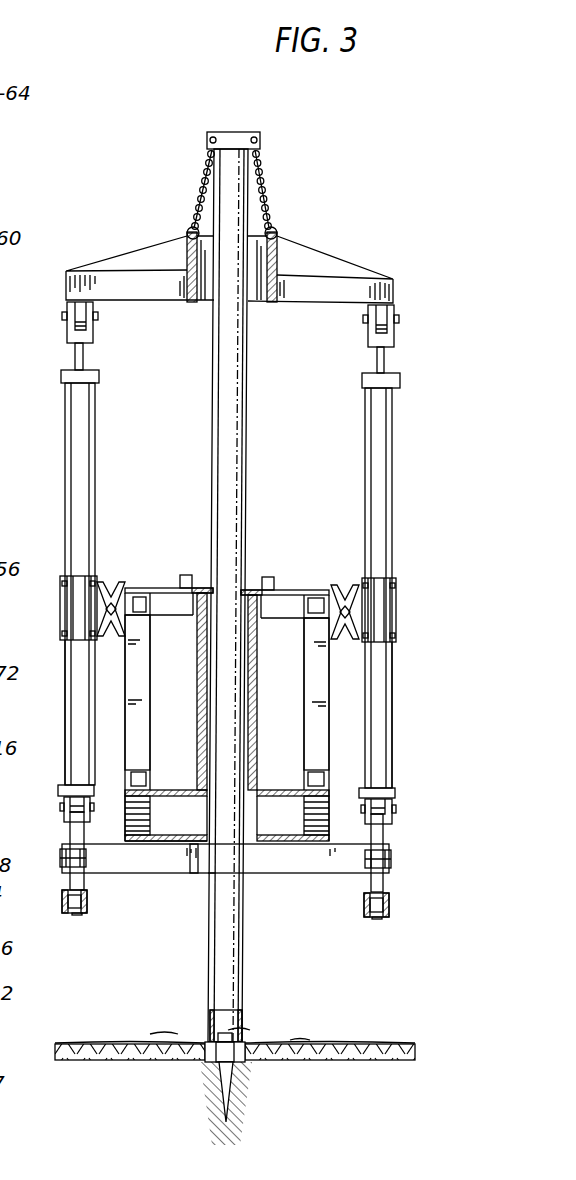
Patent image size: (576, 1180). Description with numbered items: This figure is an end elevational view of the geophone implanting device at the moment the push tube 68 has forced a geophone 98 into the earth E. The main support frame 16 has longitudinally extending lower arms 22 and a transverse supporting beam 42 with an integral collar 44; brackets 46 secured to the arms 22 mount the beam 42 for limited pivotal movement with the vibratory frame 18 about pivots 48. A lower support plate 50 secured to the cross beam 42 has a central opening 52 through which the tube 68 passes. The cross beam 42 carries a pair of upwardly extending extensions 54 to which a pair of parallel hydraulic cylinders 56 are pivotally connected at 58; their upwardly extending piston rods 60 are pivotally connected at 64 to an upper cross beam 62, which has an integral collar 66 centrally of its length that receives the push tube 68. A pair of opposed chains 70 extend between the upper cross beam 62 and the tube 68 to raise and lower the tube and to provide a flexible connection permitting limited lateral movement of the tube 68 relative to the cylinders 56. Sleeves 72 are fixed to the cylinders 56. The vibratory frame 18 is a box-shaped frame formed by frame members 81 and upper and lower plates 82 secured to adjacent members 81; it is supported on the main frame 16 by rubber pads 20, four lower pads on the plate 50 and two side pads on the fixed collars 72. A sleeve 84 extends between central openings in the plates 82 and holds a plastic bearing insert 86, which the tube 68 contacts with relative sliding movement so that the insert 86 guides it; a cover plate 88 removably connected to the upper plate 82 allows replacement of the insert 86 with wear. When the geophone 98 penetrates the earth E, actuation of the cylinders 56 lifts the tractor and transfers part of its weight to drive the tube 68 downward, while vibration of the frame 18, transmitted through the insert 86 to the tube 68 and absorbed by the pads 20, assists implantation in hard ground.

The main support frame 16 is at (395, 706).
The vibratory frame 18 is at (298, 590).
The rubber pads 20 is at (121, 639).
The lower frame members or arms 22 is at (78, 915).
The transverse supporting beam 42 is at (303, 873).
The integral collar 44 is at (209, 878).
The brackets 46 is at (63, 896).
The pivots 48 is at (58, 860).
The lower support plate 50 is at (163, 842).
The central opening 52 is at (196, 872).
The upwardly extending extensions 54 is at (70, 834).
The hydraulic cylinders 56 is at (96, 491).
The pivotal connection 58 is at (63, 808).
The piston rods 60 is at (84, 357).
The upper cross beam 62 is at (344, 272).
The pivotal connection 64 is at (62, 314).
The integral collar 66 is at (278, 254).
The push member or tube 68 is at (246, 395).
The chains 70 is at (201, 171).
The sleeves 72 is at (60, 609).
The frame members 81 is at (136, 751).
The upper and lower plates 82 is at (165, 588).
The sleeve 84 is at (258, 742).
The plastic bearing insert 86 is at (252, 693).
The cover plate 88 is at (254, 590).
The geophone 98 is at (208, 1068).
The earth E is at (355, 1043).